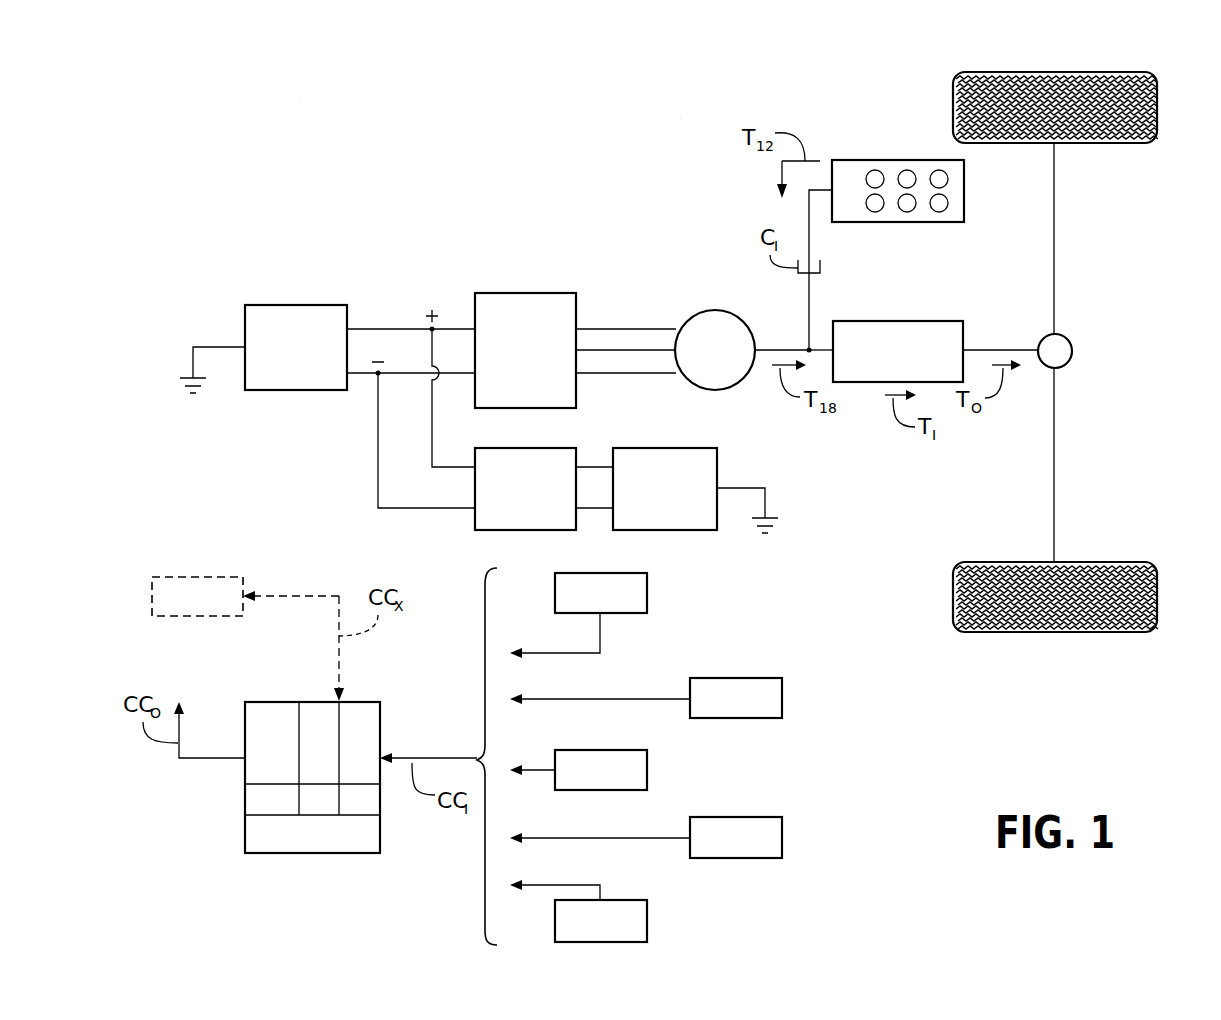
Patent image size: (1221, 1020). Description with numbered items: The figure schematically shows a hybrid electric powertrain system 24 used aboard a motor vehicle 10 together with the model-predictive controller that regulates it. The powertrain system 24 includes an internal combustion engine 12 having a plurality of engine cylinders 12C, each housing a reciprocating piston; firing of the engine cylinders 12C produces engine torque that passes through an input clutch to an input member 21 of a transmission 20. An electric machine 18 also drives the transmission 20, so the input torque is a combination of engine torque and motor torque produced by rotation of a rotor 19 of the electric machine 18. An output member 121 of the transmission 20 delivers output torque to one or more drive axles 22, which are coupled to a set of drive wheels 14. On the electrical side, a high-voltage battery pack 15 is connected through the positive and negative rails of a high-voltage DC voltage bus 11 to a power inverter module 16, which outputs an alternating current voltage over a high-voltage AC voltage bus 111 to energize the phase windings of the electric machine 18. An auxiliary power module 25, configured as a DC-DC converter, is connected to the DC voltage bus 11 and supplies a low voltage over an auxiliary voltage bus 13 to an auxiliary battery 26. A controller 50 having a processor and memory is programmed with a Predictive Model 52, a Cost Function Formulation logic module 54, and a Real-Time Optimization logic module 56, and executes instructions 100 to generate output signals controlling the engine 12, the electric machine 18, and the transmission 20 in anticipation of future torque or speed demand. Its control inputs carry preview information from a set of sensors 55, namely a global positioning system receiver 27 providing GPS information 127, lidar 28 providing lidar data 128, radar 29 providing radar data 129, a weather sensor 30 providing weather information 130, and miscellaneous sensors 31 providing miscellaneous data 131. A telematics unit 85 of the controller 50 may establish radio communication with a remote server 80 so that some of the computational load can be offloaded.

The vehicle 10 is at (296, 98).
The high-voltage DC voltage bus 11 is at (405, 327).
The internal combustion engine 12 is at (875, 160).
The engine cylinders 12C is at (912, 207).
The auxiliary voltage bus 13 is at (597, 467).
The drive wheels 14 is at (1157, 108).
The high-voltage battery pack 15 is at (297, 305).
The power inverter module 16 is at (527, 293).
The electric machine 18 is at (715, 310).
The rotor 19 is at (775, 348).
The transmission 20 is at (915, 321).
The input member 21 is at (817, 348).
The drive axles 22 is at (1054, 245).
The powertrain system 24 is at (682, 115).
The auxiliary power module 25 is at (497, 448).
The auxiliary battery 26 is at (665, 448).
The global positioning system receiver 27 is at (647, 592).
The lidar 28 is at (782, 699).
The radar 29 is at (647, 770).
The weather sensor 30 is at (782, 838).
The miscellaneous sensors 31 is at (647, 920).
The controller 50 is at (362, 876).
The Predictive Model 52 is at (270, 702).
The Cost Function Formulation logic module 54 is at (320, 702).
The Real-Time Optimization logic module 56 is at (358, 702).
The sensors 55 is at (778, 576).
The remote server 80 is at (203, 577).
The telematics unit 85 is at (322, 845).
The instructions 100 is at (290, 810).
The high-voltage AC voltage bus 111 is at (600, 327).
The output member 121 is at (980, 348).
The GPS information 127 is at (585, 651).
The lidar data 128 is at (580, 697).
The radar data 129 is at (545, 768).
The weather information 130 is at (580, 836).
The miscellaneous data 131 is at (585, 883).